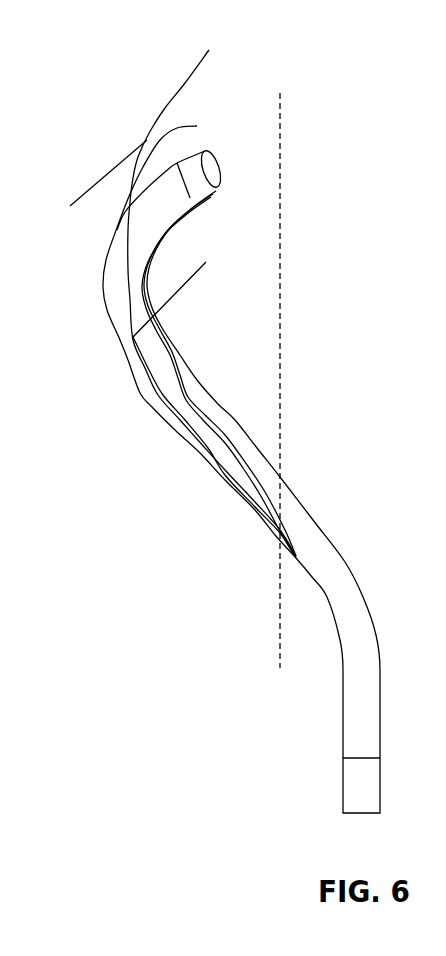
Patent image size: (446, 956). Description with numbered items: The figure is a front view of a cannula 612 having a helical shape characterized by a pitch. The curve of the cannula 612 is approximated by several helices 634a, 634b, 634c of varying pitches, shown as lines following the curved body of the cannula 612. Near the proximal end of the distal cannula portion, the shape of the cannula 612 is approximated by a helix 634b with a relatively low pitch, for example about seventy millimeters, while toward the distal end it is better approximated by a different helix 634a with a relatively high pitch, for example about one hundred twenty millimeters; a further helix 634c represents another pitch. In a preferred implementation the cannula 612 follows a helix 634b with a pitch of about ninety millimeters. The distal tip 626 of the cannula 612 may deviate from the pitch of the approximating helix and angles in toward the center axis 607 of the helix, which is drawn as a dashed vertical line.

The center axis 607 is at (280, 120).
The cannula 612 is at (320, 527).
The distal tip 626 is at (139, 149).
The helix 634a is at (206, 262).
The helix 634b is at (172, 222).
The helix 634c is at (182, 86).